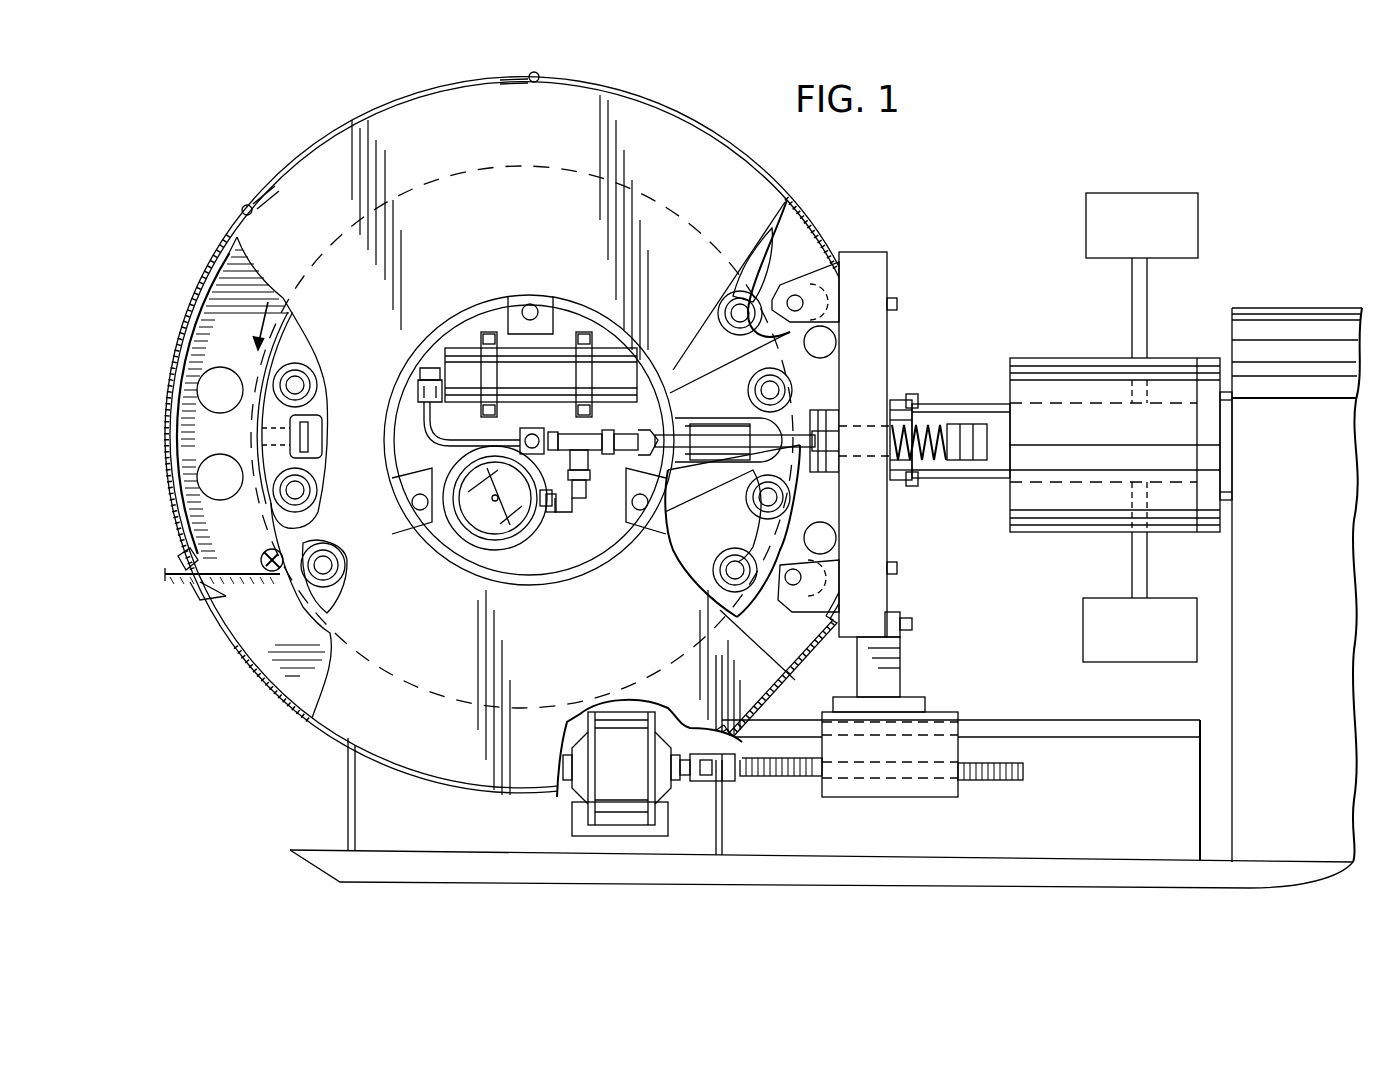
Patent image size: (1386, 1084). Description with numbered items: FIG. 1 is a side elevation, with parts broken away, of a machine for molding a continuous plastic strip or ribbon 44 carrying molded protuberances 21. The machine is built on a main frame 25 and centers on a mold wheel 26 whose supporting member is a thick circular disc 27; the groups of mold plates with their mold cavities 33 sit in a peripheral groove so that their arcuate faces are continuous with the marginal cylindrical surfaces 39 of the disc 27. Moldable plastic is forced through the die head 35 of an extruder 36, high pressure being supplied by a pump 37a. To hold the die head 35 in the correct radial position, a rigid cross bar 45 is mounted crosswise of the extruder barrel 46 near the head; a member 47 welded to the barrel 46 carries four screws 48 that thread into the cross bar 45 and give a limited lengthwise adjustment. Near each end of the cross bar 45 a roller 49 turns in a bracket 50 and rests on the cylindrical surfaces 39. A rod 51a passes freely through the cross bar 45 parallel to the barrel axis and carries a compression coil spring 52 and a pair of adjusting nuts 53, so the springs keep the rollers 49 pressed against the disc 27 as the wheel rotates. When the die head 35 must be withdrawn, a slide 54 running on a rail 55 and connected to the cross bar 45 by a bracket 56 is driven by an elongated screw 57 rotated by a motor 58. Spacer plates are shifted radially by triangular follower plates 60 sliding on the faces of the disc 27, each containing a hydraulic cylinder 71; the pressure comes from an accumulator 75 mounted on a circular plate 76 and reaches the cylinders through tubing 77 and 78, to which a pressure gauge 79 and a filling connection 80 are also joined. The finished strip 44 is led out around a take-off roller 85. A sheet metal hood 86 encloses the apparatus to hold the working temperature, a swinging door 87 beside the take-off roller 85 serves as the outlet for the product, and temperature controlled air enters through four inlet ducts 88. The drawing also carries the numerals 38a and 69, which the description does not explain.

The molded protuberances 21 is at (200, 595).
The main frame 25 is at (453, 831).
The mold wheel 26 is at (306, 597).
The thick circular disc 27 is at (292, 345).
The mold cavities 33 is at (655, 430).
The extruder die head 35 is at (822, 410).
The extruder 36 is at (1092, 370).
The pump 37a is at (1147, 660).
The control unit 38a is at (1186, 240).
The cylindrical surfaces of disc 39 is at (752, 604).
The ribbon 44 is at (168, 575).
The rigid cross bar 45 is at (888, 272).
The extruder barrel 46 is at (930, 404).
The member 47 is at (902, 400).
The screws 48 is at (918, 396).
The roller 49 is at (780, 298).
The bracket 50 is at (822, 296).
The rod 51a is at (722, 462).
The compression coil spring 52 is at (935, 424).
The adjusting nuts 53 is at (987, 434).
The slide 54 is at (900, 728).
The rail 55 is at (1042, 728).
The bracket 56 is at (900, 644).
The motor driven screw 57 is at (990, 780).
The motor 58 is at (636, 788).
The follower plate 60 is at (318, 545).
The bolt 69 is at (300, 385).
The hydraulic cylinder 71 is at (312, 436).
The accumulator 75 is at (550, 384).
The circular plate 76 is at (558, 300).
The tubing 77 is at (436, 444).
The tubing 78 is at (532, 428).
The pressure gauge 79 is at (518, 516).
The filling connection 80 is at (625, 430).
The take-off roller 85 is at (263, 552).
The hood 86 is at (718, 127).
The swinging door 87 is at (230, 276).
The inlet ducts 88 is at (210, 372).